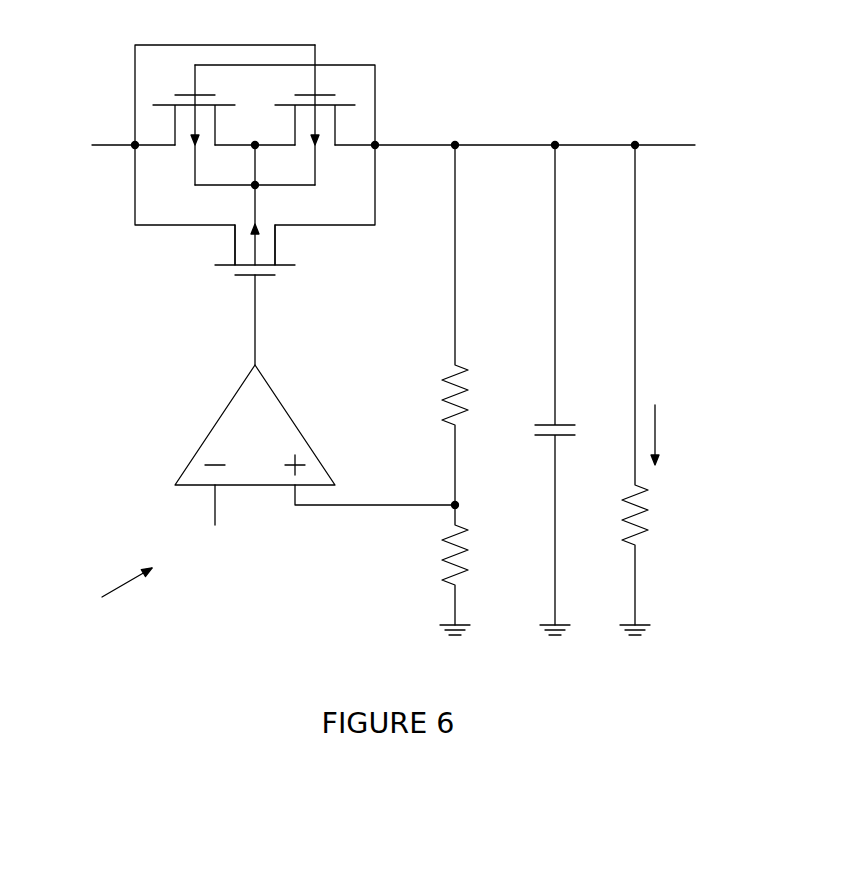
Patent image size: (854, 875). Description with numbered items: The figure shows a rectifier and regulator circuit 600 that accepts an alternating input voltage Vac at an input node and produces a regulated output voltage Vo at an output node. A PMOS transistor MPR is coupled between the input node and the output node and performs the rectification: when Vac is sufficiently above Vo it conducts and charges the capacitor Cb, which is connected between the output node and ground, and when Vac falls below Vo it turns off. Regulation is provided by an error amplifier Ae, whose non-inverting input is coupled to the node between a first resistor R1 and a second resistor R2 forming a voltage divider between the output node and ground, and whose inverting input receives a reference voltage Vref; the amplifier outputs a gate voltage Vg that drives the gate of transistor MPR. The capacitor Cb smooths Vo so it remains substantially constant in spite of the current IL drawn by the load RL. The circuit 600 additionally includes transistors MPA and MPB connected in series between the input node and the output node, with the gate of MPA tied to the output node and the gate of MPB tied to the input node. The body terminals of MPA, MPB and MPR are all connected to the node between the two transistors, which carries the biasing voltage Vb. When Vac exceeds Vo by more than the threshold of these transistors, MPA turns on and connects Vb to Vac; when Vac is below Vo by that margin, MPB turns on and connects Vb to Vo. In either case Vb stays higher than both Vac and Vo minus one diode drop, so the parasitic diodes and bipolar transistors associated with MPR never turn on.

The transistor MPA is at (225, 140).
The transistor MPB is at (285, 140).
The transistor MPR is at (212, 249).
The input voltage Vac is at (105, 132).
The output voltage Vo is at (441, 133).
The biasing voltage Vb is at (315, 195).
The gate voltage Vg is at (235, 305).
The error amplifier Ae is at (315, 435).
The reference voltage Vref is at (216, 519).
The first resistor R1 is at (481, 327).
The second resistor R2 is at (480, 570).
The capacitor Cb is at (573, 390).
The load RL is at (616, 390).
The load current IL is at (678, 435).
The circuit 600 is at (107, 598).